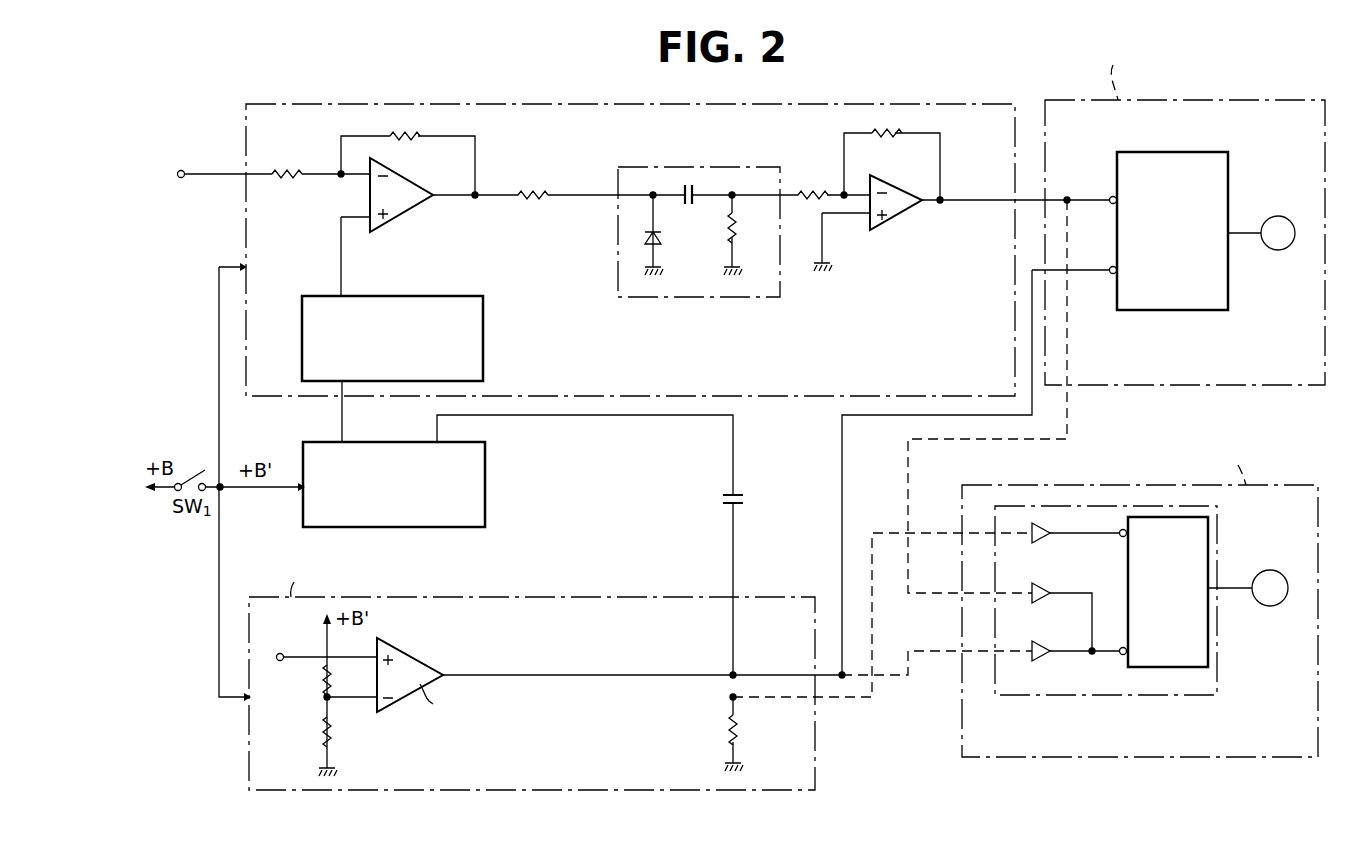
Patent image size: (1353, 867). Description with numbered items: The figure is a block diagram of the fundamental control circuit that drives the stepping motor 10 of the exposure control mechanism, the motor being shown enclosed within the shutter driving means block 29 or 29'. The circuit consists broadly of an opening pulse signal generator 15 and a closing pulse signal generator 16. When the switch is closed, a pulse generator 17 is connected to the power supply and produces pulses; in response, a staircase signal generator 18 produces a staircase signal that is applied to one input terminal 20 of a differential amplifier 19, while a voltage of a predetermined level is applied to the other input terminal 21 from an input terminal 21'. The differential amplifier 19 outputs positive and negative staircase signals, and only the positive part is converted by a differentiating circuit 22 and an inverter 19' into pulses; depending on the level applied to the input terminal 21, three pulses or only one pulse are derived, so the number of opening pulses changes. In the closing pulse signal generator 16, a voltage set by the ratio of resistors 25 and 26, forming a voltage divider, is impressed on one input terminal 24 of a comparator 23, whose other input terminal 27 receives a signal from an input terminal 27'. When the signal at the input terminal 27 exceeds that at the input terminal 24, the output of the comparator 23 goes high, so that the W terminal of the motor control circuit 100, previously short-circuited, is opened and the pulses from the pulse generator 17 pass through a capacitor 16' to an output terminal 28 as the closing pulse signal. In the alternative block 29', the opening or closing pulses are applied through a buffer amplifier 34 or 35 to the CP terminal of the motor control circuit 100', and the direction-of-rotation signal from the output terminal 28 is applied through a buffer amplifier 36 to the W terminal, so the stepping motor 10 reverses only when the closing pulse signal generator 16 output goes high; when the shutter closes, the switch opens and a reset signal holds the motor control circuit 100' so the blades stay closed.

The opening pulse signal generator 15 is at (949, 104).
The input terminal 21' is at (267, 148).
The input terminal of the differential amplifier 21 is at (346, 191).
The differential amplifier 19 is at (495, 199).
The input terminal of the differential amplifier 20 is at (370, 221).
The staircase signal generator 18 is at (483, 328).
The differentiating circuit 22 is at (693, 297).
The inverter 19' is at (962, 200).
The block enclosing the stepping motor 29 is at (1185, 214).
The motor control circuit 100 is at (1146, 260).
The stepping motor 10 is at (1276, 215).
The pulse generator 17 is at (485, 487).
The capacitor 16' is at (590, 545).
The closing pulse signal generator 16 is at (532, 664).
The input terminal 27' is at (317, 635).
The input terminal of the comparator 27 is at (349, 677).
The resistor 25 is at (322, 680).
The input terminal of the comparator 24 is at (378, 699).
The resistor 26 is at (322, 725).
The comparator 23 is at (415, 660).
The output terminal 28 is at (730, 676).
The block enclosing the stepping motor 29' is at (1139, 592).
The motor control circuit 100' is at (1106, 626).
The buffer amplifier 36 is at (1046, 538).
The buffer amplifier 34 is at (1046, 598).
The buffer amplifier 35 is at (1046, 656).